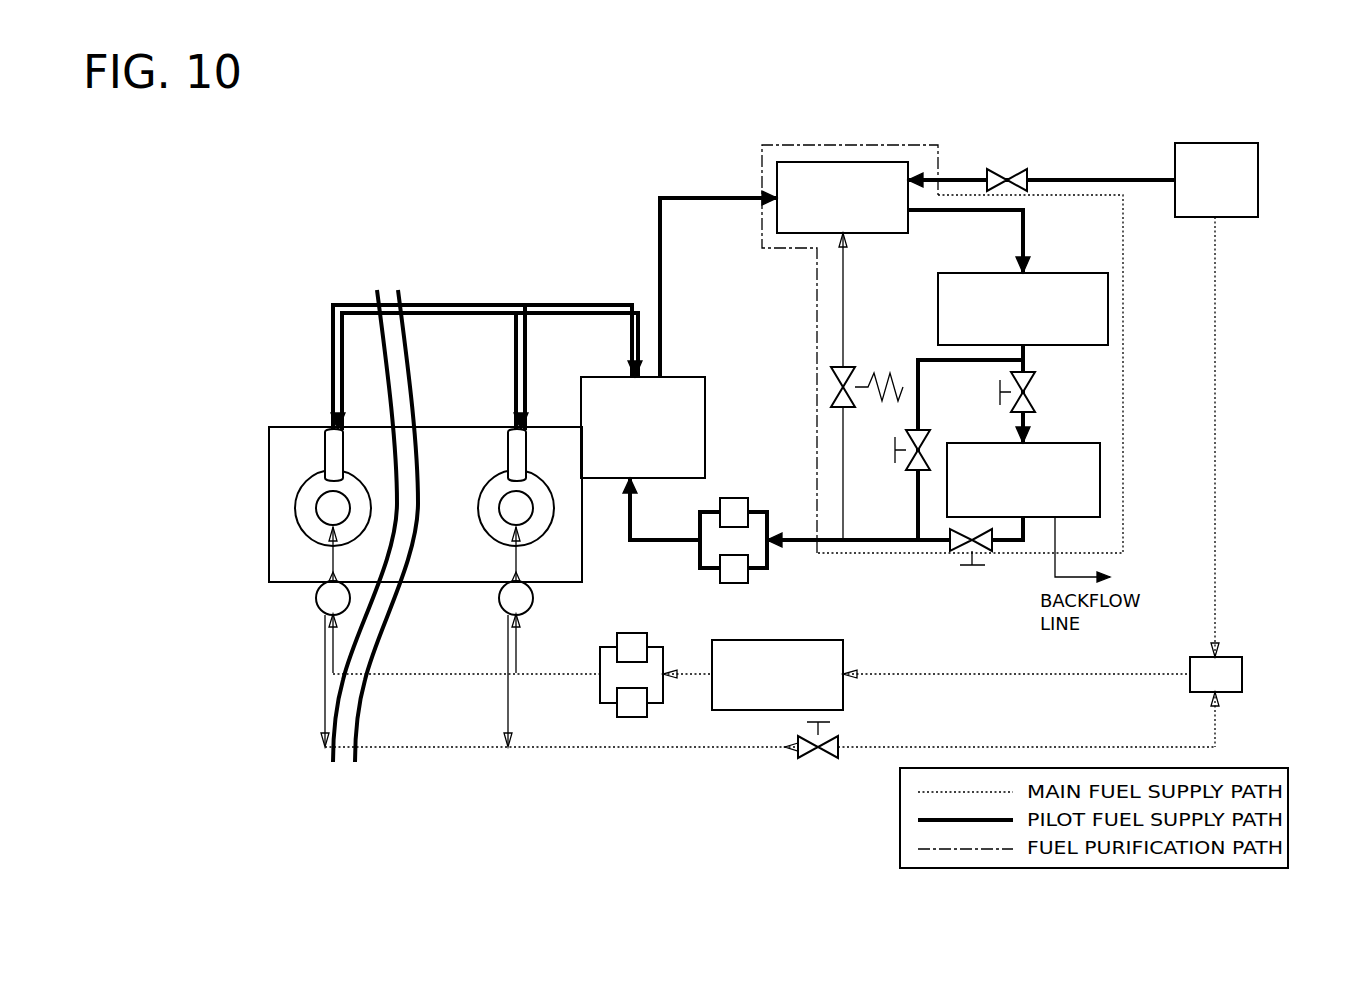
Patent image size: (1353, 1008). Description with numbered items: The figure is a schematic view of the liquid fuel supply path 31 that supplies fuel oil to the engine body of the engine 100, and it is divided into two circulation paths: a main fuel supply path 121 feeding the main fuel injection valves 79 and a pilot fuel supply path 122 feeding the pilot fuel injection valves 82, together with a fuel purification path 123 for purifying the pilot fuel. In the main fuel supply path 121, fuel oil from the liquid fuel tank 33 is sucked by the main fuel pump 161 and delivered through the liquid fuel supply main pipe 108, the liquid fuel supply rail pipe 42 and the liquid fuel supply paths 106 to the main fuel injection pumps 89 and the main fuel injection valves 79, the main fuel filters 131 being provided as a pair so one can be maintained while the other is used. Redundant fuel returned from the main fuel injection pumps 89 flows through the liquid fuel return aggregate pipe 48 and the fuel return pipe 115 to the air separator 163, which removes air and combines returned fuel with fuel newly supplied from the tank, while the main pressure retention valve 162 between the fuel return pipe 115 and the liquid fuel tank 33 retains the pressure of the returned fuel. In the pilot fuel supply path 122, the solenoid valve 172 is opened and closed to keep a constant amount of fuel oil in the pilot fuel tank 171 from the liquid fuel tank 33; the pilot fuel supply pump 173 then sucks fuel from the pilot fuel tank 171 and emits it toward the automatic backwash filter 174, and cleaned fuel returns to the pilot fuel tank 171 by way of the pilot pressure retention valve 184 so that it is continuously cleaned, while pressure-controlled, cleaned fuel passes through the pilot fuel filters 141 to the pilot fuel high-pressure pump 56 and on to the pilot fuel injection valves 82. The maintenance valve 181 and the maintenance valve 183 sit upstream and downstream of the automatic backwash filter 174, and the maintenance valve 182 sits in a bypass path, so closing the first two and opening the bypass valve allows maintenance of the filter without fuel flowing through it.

The engine 100 is at (272, 202).
The liquid fuel supply path 31 is at (434, 230).
The pilot fuel injection valves 82 is at (325, 462).
The main fuel injection valves 79 is at (318, 510).
The liquid fuel supply paths 106 is at (328, 578).
The main fuel injection pumps 89 is at (320, 614).
The liquid fuel supply rail pipe 42 is at (413, 674).
The liquid fuel return aggregate pipe 48 is at (437, 750).
The fuel return pipe 115 is at (560, 750).
The liquid fuel supply main pipe 108 is at (550, 670).
The main fuel filters 131 is at (640, 690).
The pilot fuel high-pressure pump 56 is at (705, 418).
The pilot fuel filters 141 is at (738, 555).
The main fuel pump 161 is at (843, 645).
The main pressure retention valve 162 is at (797, 750).
The air separator 163 is at (1242, 675).
The main fuel supply path 121 is at (1215, 445).
The pilot fuel supply path 122 is at (1140, 175).
The liquid fuel tank 33 is at (1240, 217).
The pilot fuel tank 171 is at (770, 170).
The solenoid valve 172 is at (1028, 172).
The pilot fuel supply pump 173 is at (1060, 273).
The pilot pressure retention valve 184 is at (848, 368).
The fuel purification path 123 is at (1127, 257).
The maintenance valve 181 is at (1035, 385).
The automatic backwash filter 174 is at (1077, 418).
The maintenance valve 182 is at (915, 472).
The maintenance valve 183 is at (950, 548).